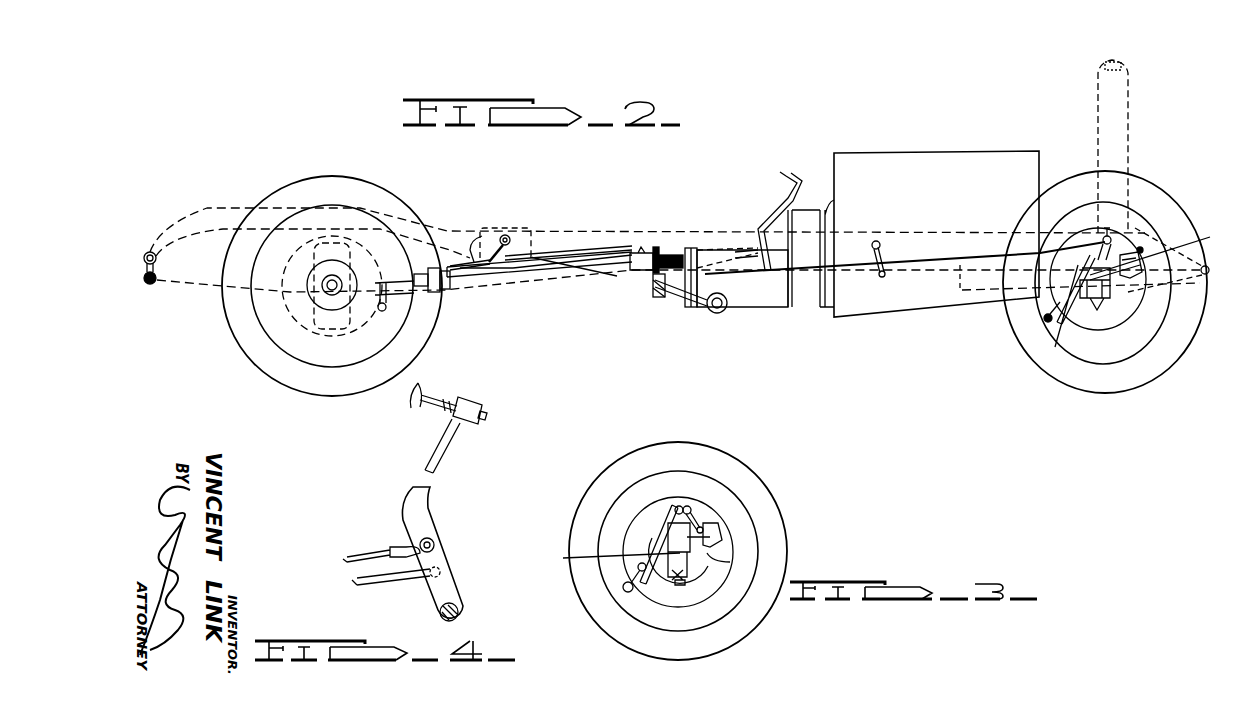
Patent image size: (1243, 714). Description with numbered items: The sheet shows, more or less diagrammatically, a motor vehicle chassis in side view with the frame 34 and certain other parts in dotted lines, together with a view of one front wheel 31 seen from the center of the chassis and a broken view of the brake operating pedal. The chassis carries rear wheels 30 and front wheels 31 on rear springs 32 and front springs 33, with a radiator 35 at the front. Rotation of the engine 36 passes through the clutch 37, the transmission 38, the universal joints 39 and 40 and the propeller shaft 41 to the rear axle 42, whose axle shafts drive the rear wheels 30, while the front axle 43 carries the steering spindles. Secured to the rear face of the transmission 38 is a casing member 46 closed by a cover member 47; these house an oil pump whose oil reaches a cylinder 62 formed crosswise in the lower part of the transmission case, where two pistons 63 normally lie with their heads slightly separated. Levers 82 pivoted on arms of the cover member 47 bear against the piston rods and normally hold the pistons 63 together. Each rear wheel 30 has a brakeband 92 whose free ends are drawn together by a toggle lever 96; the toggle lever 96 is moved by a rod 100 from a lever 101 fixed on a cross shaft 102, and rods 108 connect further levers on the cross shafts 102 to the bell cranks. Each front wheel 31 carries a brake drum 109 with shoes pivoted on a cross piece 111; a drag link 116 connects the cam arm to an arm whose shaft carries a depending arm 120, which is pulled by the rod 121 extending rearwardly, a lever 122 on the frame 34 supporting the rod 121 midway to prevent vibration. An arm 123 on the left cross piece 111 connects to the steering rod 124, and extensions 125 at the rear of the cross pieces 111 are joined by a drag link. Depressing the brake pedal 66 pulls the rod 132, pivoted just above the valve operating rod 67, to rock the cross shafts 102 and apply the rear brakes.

In FIG. 2, the rear wheels 30 is at (240, 348).
In FIG. 2, the front wheels 31 is at (1190, 342).
In FIG. 3, the front wheels 31 is at (786, 520).
In FIG. 2, the rear springs 32 is at (176, 292).
In FIG. 2, the front springs 33 is at (1206, 276).
In FIG. 2, the frame 34 is at (190, 222).
In FIG. 2, the radiator 35 is at (1130, 80).
In FIG. 2, the engine 36 is at (977, 152).
In FIG. 2, the clutch 37 is at (830, 205).
In FIG. 2, the transmission 38 is at (770, 307).
In FIG. 2, the universal joint 39 is at (650, 250).
In FIG. 2, the universal joint 40 is at (445, 292).
In FIG. 2, the propeller shaft 41 is at (516, 275).
In FIG. 2, the rear axle 42 is at (315, 280).
In FIG. 2, the front axle 43 is at (1095, 313).
In FIG. 3, the front axle 43 is at (682, 587).
In FIG. 2, the casing member 46 is at (690, 250).
In FIG. 2, the cover member 47 is at (675, 255).
In FIG. 2, the cylinder 62 is at (718, 313).
In FIG. 2, the pistons 63 is at (725, 298).
In FIG. 2, the brake pedal 66 is at (776, 187).
In FIG. 4, the brake pedal 66 is at (430, 504).
In FIG. 2, the valve operating rod 67 is at (738, 252).
In FIG. 4, the valve operating rod 67 is at (388, 585).
In FIG. 2, the lever 82 is at (684, 300).
In FIG. 2, the brakeband 92 is at (322, 330).
In FIG. 2, the toggle lever 96 is at (390, 305).
In FIG. 2, the rod 100 is at (462, 264).
In FIG. 2, the lever 101 is at (480, 236).
In FIG. 2, the cross shaft 102 is at (506, 234).
In FIG. 2, the rod 108 is at (575, 272).
In FIG. 2, the brake drum 109 is at (1127, 327).
In FIG. 2, the cross piece 111 is at (1200, 243).
In FIG. 2, the drag link 116 is at (1055, 347).
In FIG. 3, the drag link 116 is at (660, 537).
In FIG. 2, the arm 120 is at (1112, 238).
In FIG. 3, the arm 120 is at (710, 502).
In FIG. 2, the rod 121 is at (998, 262).
In FIG. 2, the lever 122 is at (880, 253).
In FIG. 2, the arm 123 is at (1135, 283).
In FIG. 3, the arm 123 is at (735, 562).
In FIG. 3, the rod 124 is at (555, 560).
In FIG. 2, the extensions 125 is at (1044, 318).
In FIG. 2, the rod 132 is at (583, 248).
In FIG. 4, the rod 132 is at (360, 552).